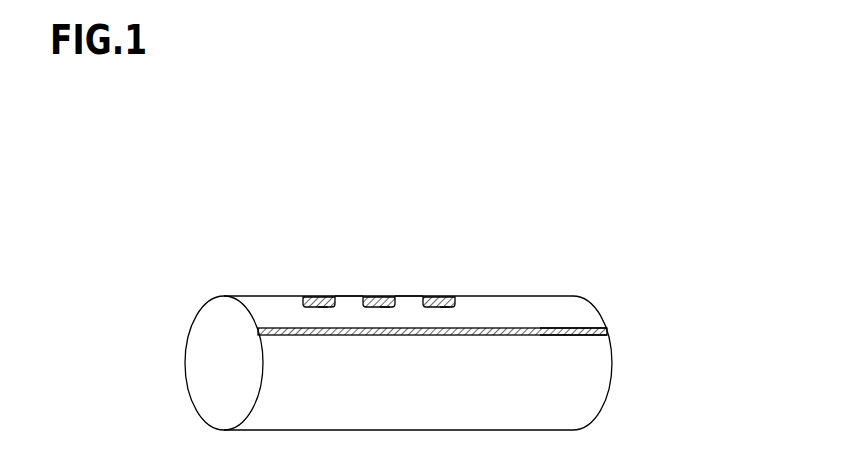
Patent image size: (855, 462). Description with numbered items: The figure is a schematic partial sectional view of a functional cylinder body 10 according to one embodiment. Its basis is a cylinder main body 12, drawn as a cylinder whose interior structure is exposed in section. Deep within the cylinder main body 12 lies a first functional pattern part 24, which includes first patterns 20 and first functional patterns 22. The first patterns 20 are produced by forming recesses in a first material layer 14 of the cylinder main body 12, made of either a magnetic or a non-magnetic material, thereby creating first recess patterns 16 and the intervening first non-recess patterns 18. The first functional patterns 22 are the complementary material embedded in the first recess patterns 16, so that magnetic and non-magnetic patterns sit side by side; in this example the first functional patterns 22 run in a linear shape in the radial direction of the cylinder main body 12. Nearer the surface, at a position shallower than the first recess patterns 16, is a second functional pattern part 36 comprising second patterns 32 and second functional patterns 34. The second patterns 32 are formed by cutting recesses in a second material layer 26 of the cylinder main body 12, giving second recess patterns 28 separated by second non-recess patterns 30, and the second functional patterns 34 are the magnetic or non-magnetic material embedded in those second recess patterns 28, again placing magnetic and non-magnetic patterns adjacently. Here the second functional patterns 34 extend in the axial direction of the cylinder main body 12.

The functional cylinder body 10 is at (610, 224).
The cylinder main body 12 is at (533, 302).
The first material layer 14 is at (584, 322).
The first recess patterns 16 is at (568, 327).
The first non-recess patterns 18 is at (605, 335).
The first patterns 20 is at (556, 340).
The first functional patterns 22 is at (507, 337).
The first functional pattern part 24 is at (257, 331).
The second material layer 26 is at (487, 302).
The second recess patterns 28 is at (323, 307).
The second non-recess patterns 30 is at (348, 296).
The second patterns 32 is at (418, 296).
The second functional patterns 34 is at (322, 303).
The second functional pattern part 36 is at (465, 157).